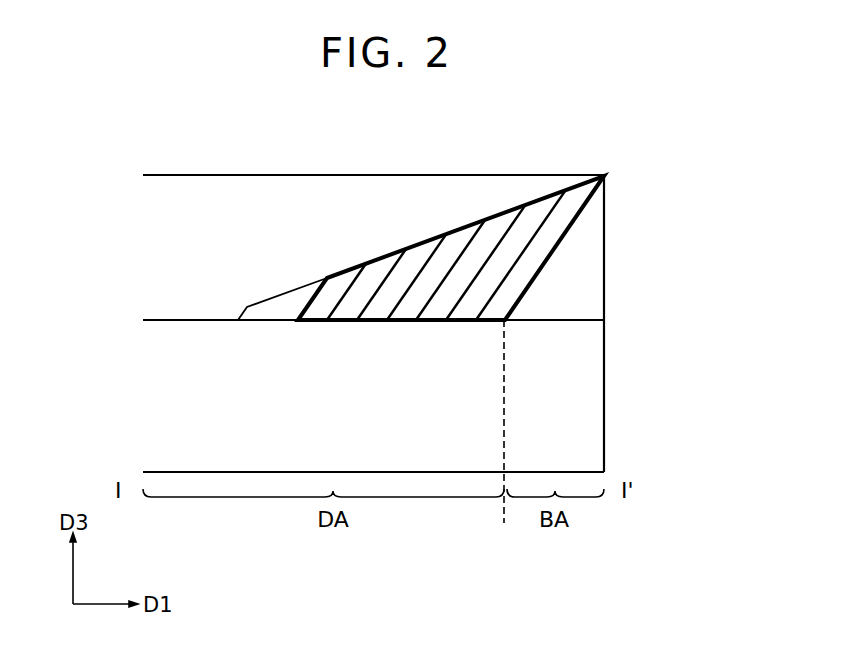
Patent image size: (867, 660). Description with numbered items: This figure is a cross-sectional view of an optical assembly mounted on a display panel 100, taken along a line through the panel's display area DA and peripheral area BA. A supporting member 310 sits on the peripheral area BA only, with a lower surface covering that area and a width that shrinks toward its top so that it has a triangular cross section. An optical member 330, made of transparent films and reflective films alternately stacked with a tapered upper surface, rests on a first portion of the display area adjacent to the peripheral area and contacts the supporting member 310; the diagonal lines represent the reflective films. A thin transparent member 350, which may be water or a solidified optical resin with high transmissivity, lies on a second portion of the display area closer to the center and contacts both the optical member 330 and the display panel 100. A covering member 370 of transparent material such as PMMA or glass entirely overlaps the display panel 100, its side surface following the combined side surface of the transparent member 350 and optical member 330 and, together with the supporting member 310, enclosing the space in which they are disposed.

The display panel 100 is at (598, 405).
The supporting member 310 is at (602, 280).
The optical member 330 is at (557, 230).
The transparent member 350 is at (280, 302).
The covering member 370 is at (373, 192).